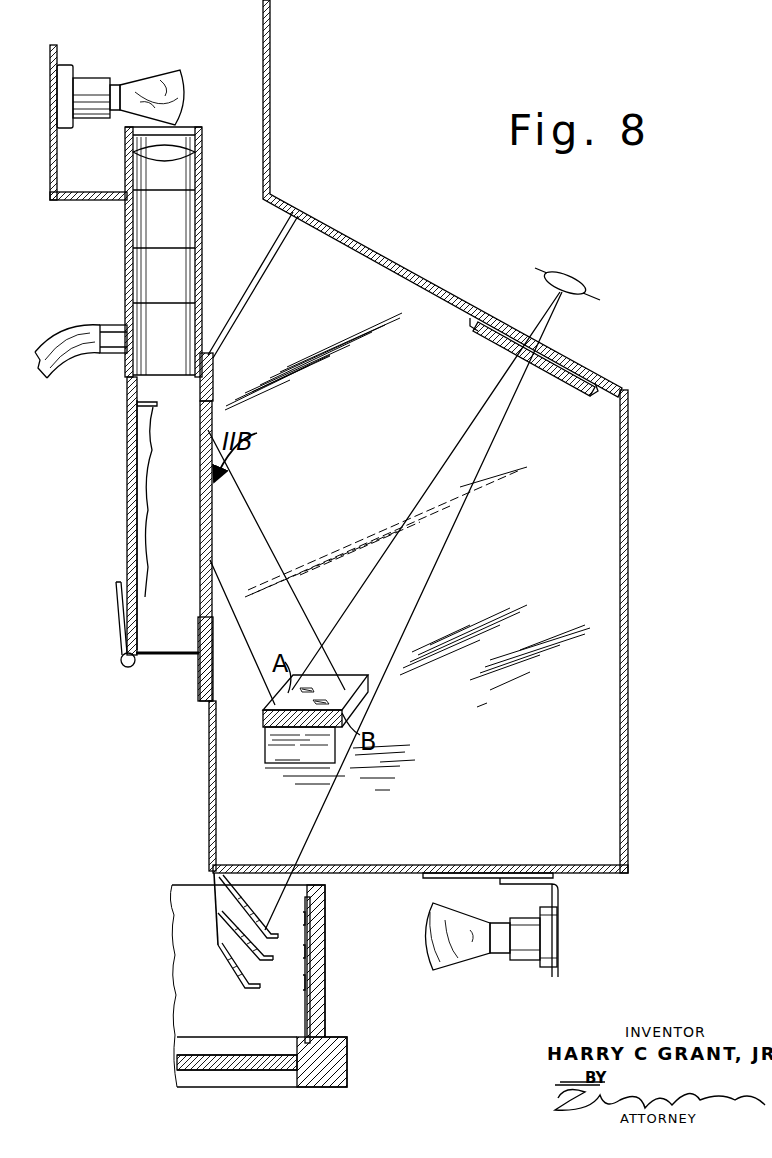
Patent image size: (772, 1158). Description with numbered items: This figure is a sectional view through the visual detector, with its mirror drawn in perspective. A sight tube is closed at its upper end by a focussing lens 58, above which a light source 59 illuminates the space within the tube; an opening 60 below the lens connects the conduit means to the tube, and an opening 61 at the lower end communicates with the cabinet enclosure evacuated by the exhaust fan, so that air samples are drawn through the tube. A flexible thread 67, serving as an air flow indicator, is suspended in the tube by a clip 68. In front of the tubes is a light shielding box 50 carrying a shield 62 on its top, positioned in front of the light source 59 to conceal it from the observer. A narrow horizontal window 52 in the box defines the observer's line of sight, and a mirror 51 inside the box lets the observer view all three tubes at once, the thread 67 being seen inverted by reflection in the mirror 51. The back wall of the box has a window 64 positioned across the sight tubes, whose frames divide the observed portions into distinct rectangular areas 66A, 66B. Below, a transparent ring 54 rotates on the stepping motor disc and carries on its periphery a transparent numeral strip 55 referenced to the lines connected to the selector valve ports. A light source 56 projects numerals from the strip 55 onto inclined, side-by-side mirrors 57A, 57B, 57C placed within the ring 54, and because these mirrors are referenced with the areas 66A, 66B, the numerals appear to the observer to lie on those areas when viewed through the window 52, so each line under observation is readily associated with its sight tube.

The light shielding box 50 is at (632, 606).
The mirror 51 is at (287, 707).
The window 52 is at (521, 320).
The transparent ring 54 is at (317, 1007).
The numeral strip 55 is at (307, 993).
The light source 56 is at (462, 957).
The mirror 57A is at (237, 940).
The mirror 57B is at (237, 920).
The mirror 57C is at (237, 973).
The focussing lens 58 is at (197, 147).
The light source 59 is at (157, 70).
The opening 60 is at (117, 347).
The opening 61 is at (153, 642).
The shield 62 is at (270, 140).
The window 64 is at (207, 500).
The rectangular area 66A is at (330, 685).
The rectangular area 66B is at (357, 702).
The flexible thread 67 is at (165, 502).
The clip 68 is at (120, 603).